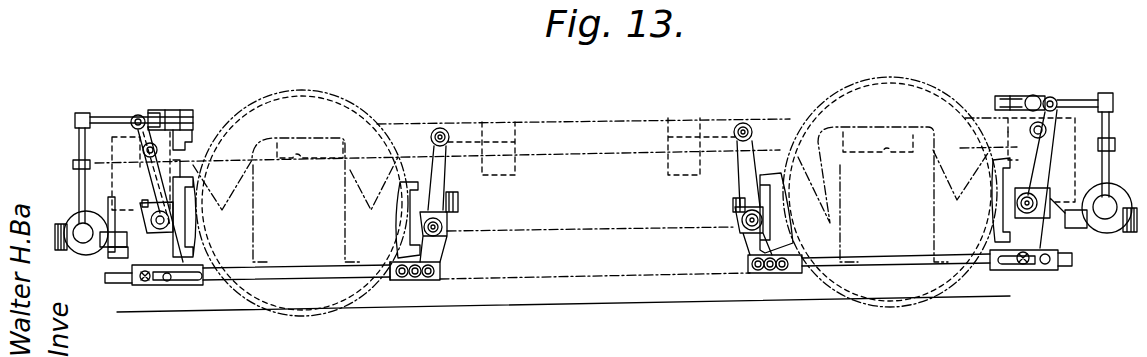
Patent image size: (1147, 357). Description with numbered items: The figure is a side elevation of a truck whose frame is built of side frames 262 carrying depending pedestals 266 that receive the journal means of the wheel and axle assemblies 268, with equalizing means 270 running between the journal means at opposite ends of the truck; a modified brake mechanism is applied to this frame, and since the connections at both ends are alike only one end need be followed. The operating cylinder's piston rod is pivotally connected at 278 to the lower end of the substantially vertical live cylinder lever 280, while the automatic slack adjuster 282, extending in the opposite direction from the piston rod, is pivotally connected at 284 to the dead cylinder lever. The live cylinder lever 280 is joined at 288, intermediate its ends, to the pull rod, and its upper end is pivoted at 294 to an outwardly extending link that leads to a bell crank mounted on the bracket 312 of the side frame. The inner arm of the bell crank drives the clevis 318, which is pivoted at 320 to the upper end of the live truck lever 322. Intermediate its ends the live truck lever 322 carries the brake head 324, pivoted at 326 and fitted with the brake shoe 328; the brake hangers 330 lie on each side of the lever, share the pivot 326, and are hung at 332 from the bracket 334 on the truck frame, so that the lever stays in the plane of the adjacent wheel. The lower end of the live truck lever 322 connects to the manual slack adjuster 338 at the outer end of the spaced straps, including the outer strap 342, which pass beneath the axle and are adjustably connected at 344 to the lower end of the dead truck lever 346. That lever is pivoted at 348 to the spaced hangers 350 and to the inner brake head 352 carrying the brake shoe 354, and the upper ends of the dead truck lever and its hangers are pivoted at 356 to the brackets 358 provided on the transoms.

The side frames 262 is at (590, 132).
The depending pedestals 266 is at (840, 212).
The wheel and axle assemblies 268 is at (888, 62).
The equalizing means 270 is at (600, 230).
The pivotal connection of piston rod to live cylinder lever 278 is at (63, 215).
The live cylinder lever 280 is at (68, 207).
The automatic slack adjuster 282 is at (1115, 235).
The pivotal connection of slack adjuster to dead cylinder lever 284 is at (1105, 217).
The pivotal connection of live cylinder lever to pull rod 288 is at (82, 113).
The pivotal connection of live cylinder lever to link 294 is at (97, 117).
The bracket 312 is at (1010, 73).
The clevis 318 is at (176, 118).
The pivotal connection of clevis to live truck lever 320 is at (150, 128).
The live truck lever 322 is at (157, 240).
The brake head 324 is at (183, 262).
The pivotal connection of brake head and hangers to live truck lever 326 is at (175, 218).
The brake shoe 328 is at (193, 190).
The brake hangers 330 is at (183, 170).
The pivotal connection of hangers to bracket 332 is at (167, 147).
The bracket 334 is at (139, 114).
The manual slack adjuster 338 is at (145, 278).
The outer strap 342 is at (313, 272).
The adjustable connection of straps to dead truck lever 344 is at (433, 281).
The dead truck lever 346 is at (433, 250).
The pivotal connection of dead truck lever to hangers and inner brake head 348 is at (446, 225).
The spaced hangers 350 is at (445, 193).
The inner brake head 352 is at (405, 278).
The brake shoe 354 is at (397, 245).
The pivotal connection of dead truck lever and hangers to brackets 356 is at (452, 100).
The brackets 358 is at (468, 122).